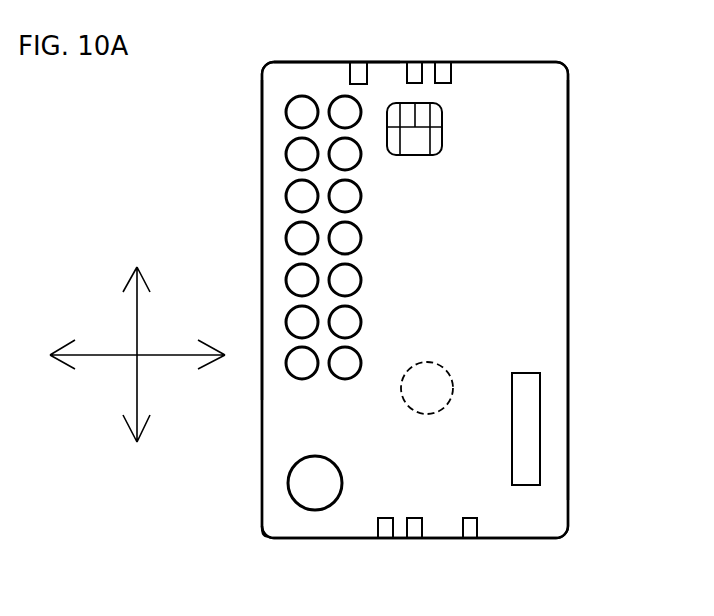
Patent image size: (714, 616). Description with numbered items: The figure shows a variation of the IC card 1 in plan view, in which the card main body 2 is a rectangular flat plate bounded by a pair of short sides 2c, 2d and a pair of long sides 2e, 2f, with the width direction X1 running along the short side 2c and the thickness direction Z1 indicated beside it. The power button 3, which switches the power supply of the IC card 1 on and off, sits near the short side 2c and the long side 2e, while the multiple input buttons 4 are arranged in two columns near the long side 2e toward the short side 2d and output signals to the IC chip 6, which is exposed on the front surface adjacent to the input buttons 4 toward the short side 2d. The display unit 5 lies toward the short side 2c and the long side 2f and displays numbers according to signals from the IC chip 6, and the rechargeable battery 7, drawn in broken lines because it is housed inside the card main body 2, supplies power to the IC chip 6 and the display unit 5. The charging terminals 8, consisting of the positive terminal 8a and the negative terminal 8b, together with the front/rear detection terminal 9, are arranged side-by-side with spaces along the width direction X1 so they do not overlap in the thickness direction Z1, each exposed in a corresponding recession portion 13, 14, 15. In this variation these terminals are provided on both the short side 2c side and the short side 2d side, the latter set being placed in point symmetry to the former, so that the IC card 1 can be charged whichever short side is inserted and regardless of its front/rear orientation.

The IC card 1 is at (568, 84).
The card main body 2 is at (556, 118).
The short side 2c is at (288, 540).
The short side 2d is at (290, 62).
The long side 2e is at (262, 158).
The long side 2f is at (568, 258).
The power button 3 is at (326, 491).
The input buttons 4 is at (296, 268).
The display unit 5 is at (540, 425).
The IC chip 6 is at (442, 128).
The rechargeable battery 7 is at (447, 373).
The charging terminals 8 is at (449, 68).
The positive terminal 8a is at (357, 64).
The negative terminal 8b is at (388, 530).
The front/rear detection terminal 9 is at (415, 70).
The recession portion 13 is at (358, 68).
The recession portion 14 is at (439, 68).
The recession portion 15 is at (416, 64).
The width direction X1 is at (165, 355).
The thickness direction Z1 is at (138, 397).